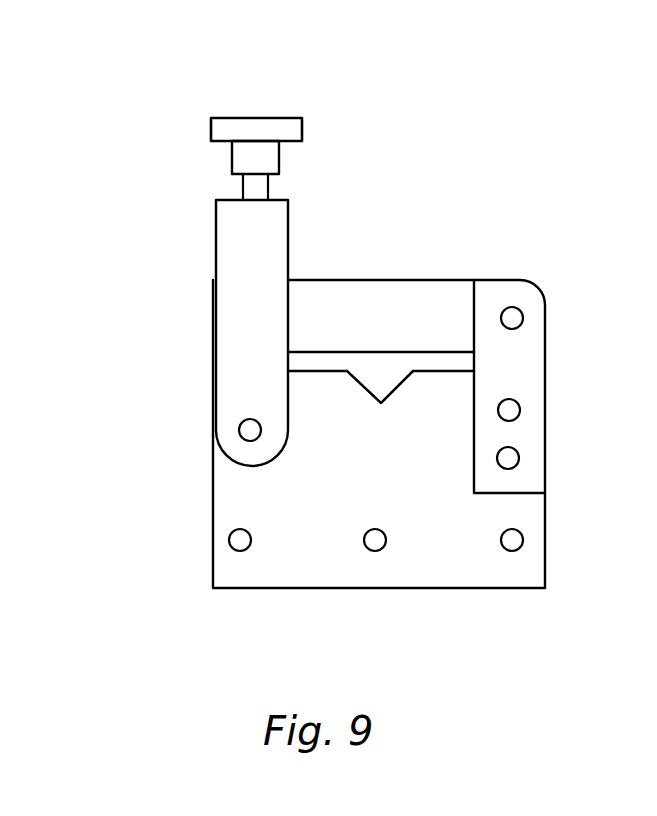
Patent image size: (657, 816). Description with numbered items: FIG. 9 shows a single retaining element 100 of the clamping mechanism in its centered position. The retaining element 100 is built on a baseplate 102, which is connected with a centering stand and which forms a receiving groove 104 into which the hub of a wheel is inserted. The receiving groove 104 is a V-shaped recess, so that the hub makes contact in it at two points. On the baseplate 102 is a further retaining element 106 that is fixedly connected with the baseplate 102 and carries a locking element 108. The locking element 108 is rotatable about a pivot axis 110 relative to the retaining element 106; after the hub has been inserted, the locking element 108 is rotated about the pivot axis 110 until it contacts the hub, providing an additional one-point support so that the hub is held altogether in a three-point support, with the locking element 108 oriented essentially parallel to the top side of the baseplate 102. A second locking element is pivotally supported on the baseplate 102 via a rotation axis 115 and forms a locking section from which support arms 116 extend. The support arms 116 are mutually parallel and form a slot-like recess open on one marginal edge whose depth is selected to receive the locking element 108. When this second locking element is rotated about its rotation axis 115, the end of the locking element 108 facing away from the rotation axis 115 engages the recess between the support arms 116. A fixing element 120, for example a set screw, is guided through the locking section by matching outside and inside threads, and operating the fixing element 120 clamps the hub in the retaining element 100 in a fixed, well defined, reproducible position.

The retaining element 100 is at (505, 121).
The baseplate 102 is at (462, 562).
The receiving groove 104 is at (397, 390).
The retaining element 106 is at (518, 368).
The locking element 108 is at (443, 298).
The pivot axis 110 is at (516, 314).
The rotation axis 115 is at (249, 431).
The support arms 116 is at (243, 265).
The fixing element 120 is at (273, 132).